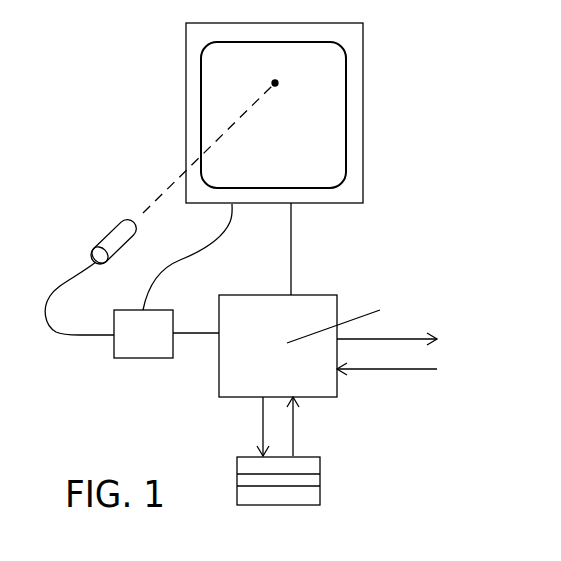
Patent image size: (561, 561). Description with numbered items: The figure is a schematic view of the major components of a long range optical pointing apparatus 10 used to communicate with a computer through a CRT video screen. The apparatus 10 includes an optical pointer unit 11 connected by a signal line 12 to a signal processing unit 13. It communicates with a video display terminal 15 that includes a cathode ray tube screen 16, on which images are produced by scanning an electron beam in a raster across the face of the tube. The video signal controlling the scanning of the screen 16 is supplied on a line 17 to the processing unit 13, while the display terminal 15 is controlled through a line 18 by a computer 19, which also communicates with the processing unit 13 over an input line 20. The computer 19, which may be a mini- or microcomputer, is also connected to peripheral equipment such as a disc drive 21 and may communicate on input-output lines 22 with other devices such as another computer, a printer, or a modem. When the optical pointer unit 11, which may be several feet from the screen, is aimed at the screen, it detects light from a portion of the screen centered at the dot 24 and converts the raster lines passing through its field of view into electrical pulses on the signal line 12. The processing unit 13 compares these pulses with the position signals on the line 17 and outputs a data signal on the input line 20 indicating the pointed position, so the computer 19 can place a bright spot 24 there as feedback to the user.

The long range optical pointing apparatus 10 is at (77, 252).
The optical pointer unit 11 is at (122, 232).
The signal line 12 is at (54, 334).
The signal processing unit 13 is at (142, 358).
The video display terminal 15 is at (363, 87).
The cathode ray tube screen 16 is at (325, 150).
The line 17 is at (205, 253).
The line 18 is at (291, 253).
The computer 19 is at (337, 313).
The input line 20 is at (207, 336).
The disc drive 21 is at (322, 464).
The input-output lines 22 is at (355, 340).
The dot 24 is at (275, 83).